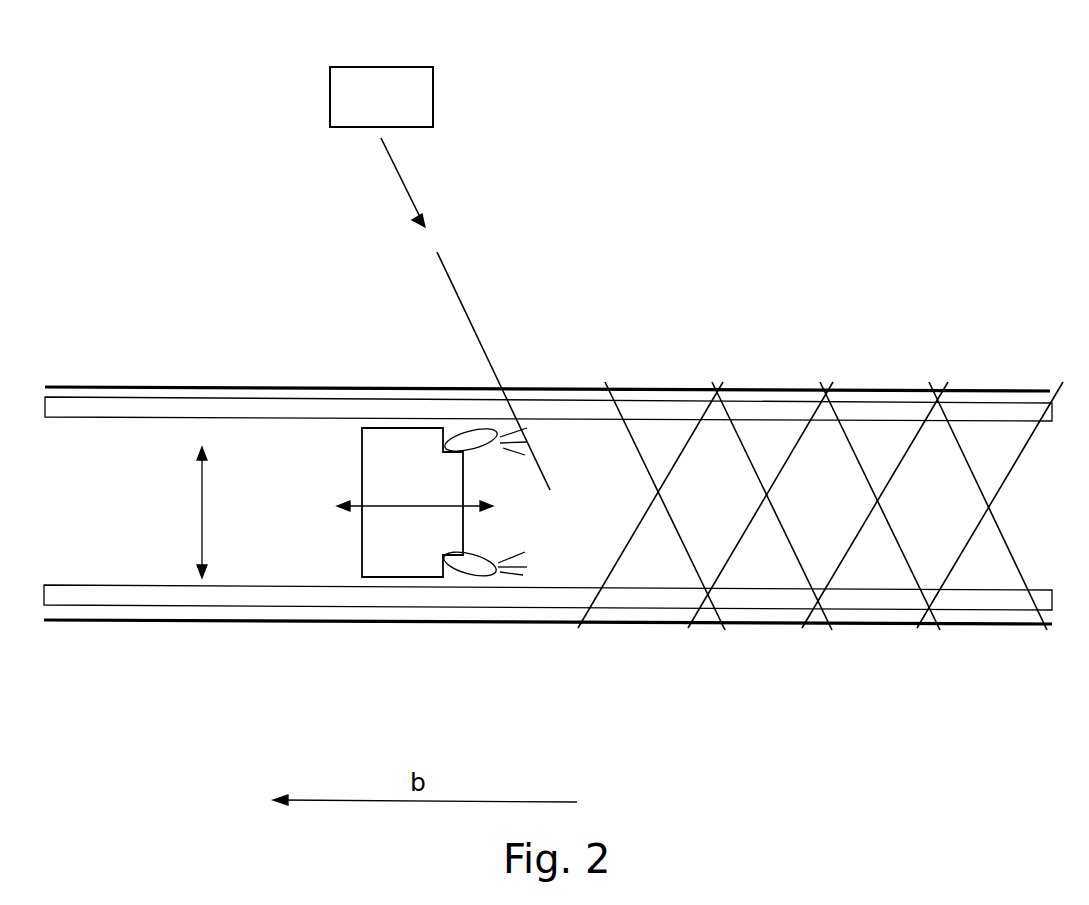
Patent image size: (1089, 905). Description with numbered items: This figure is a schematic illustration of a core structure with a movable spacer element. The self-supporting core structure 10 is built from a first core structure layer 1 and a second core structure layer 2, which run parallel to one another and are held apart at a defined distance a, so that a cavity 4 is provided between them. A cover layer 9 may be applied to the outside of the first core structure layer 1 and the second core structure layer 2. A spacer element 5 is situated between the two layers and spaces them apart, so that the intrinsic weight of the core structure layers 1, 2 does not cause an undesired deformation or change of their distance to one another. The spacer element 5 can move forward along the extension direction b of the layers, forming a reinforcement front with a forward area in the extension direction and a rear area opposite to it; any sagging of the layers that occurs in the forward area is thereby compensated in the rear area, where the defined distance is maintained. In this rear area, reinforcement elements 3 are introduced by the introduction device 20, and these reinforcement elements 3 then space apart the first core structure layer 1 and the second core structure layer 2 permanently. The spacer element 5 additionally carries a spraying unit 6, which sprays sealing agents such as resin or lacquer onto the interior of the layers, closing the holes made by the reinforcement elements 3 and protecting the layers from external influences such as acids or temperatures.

The first core structure layer 1 is at (193, 408).
The second core structure layer 2 is at (248, 597).
The reinforcement element 3 is at (473, 323).
The cavity 4 is at (163, 557).
The spacer element 5 is at (413, 558).
The spraying unit 6 is at (470, 580).
The cover layer 9 is at (117, 385).
The self-supporting core structure 10 is at (308, 252).
The introduction device 20 is at (433, 88).